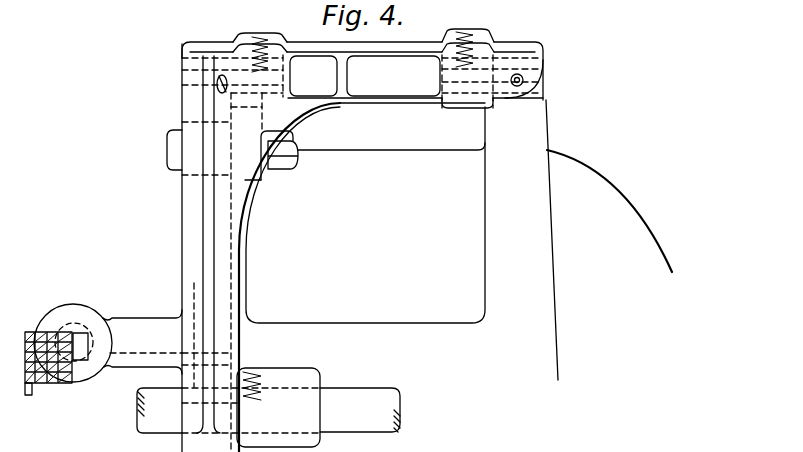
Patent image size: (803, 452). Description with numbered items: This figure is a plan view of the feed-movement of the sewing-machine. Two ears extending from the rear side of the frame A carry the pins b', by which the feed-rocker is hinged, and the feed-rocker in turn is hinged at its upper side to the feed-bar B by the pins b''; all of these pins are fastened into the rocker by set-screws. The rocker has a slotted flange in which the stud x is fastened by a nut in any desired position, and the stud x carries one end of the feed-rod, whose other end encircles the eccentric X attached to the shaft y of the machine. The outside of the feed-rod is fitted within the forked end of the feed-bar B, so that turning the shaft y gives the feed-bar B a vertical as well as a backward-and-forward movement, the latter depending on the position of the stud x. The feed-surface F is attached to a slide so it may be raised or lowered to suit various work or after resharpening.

The frame A is at (362, 277).
The feed-bar B is at (288, 205).
The feed-surface F is at (40, 363).
The eccentric X is at (251, 407).
The shaft y is at (360, 410).
The stud x is at (168, 152).
The pins b' is at (361, 64).
The pins b'' is at (363, 84).